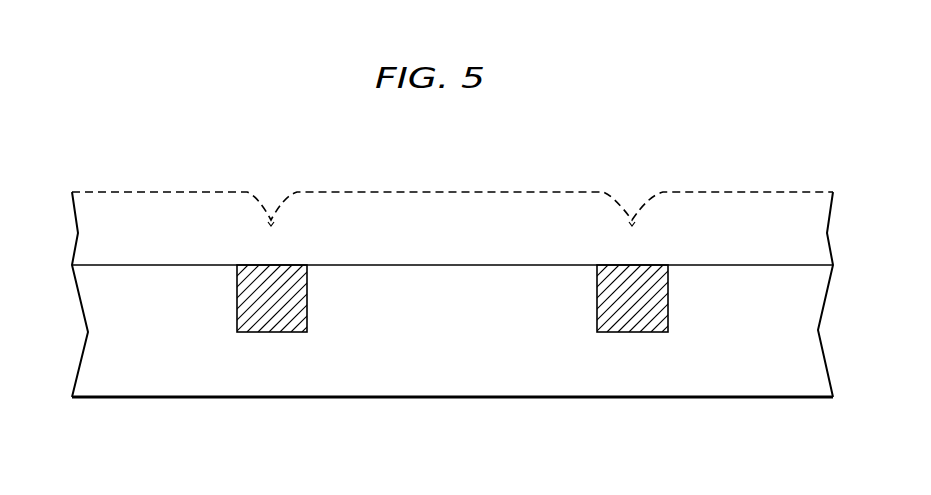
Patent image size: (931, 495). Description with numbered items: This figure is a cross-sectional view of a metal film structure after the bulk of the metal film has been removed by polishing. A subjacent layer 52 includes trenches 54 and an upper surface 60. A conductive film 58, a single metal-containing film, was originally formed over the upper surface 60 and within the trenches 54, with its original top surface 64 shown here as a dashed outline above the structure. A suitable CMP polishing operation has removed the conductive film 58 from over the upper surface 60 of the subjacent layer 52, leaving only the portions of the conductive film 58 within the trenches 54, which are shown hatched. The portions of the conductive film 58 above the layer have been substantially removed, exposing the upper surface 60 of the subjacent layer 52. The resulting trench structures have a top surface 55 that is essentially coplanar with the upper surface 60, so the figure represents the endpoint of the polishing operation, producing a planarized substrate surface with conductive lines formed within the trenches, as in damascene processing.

The subjacent layer 52 is at (476, 350).
The trenches 54 is at (650, 330).
The top surface 55 is at (280, 263).
The conductive film 58 is at (263, 320).
The upper surface 60 is at (450, 263).
The top surface 64 is at (517, 190).